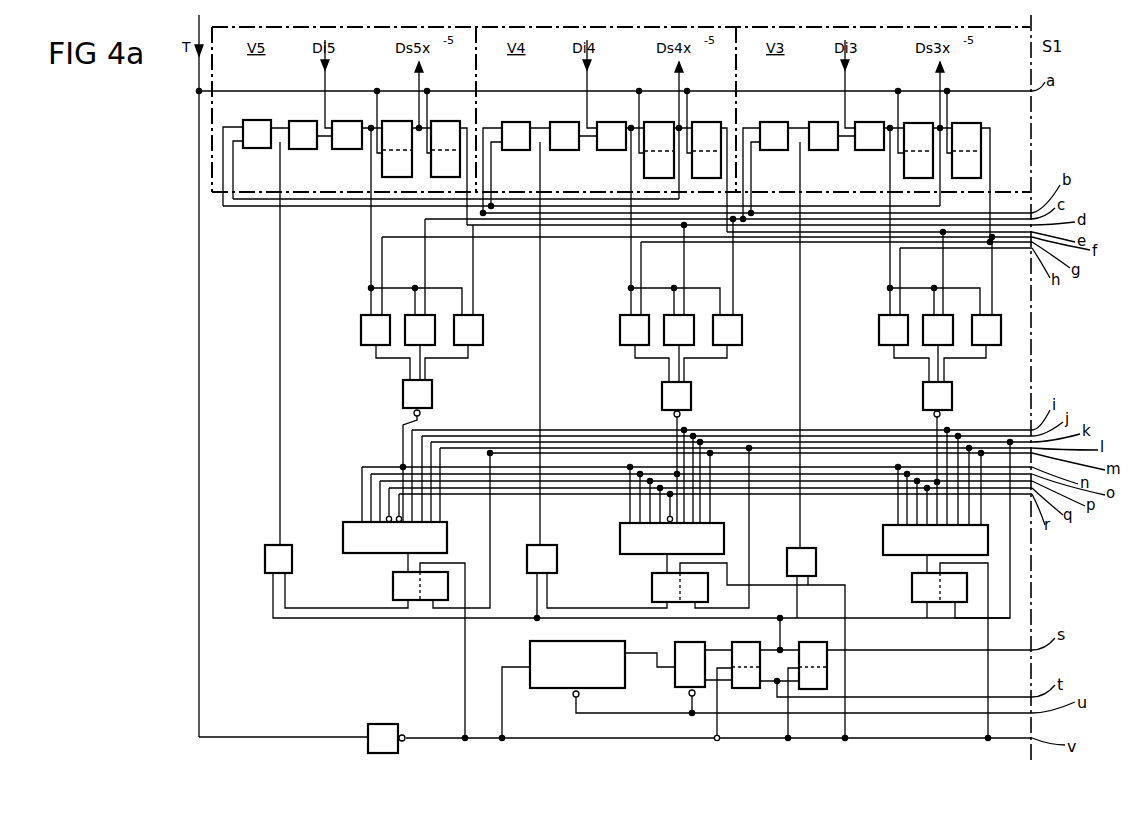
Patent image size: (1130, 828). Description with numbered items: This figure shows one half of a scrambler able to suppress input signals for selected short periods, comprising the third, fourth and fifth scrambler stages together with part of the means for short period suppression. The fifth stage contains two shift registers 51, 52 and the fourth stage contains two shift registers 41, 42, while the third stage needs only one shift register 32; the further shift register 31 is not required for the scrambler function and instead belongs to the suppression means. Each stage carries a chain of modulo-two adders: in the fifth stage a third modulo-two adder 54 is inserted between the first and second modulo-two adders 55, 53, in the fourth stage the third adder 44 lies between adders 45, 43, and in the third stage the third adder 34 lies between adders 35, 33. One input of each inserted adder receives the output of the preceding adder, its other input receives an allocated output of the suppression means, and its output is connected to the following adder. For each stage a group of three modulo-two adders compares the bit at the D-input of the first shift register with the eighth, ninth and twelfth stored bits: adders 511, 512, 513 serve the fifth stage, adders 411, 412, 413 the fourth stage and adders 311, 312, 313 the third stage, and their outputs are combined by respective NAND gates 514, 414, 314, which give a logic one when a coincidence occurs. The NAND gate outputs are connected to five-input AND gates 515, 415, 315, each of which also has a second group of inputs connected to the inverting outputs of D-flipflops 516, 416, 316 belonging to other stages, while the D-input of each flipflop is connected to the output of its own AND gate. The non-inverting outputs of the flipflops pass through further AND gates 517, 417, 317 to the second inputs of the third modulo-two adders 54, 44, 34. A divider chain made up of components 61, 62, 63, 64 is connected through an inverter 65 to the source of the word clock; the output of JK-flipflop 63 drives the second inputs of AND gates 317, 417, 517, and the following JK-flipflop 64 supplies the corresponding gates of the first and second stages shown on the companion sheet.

The shift register 31 is at (955, 104).
The shift register 32 is at (907, 104).
The exclusive-OR gate 33 is at (858, 104).
The third modulo-2 adder 34 is at (812, 104).
The exclusive-OR gate 35 is at (763, 104).
The shift register 41 is at (695, 104).
The shift register 42 is at (647, 104).
The exclusive-OR gate 43 is at (600, 104).
The third modulo-2 adder 44 is at (553, 104).
The exclusive-OR gate 45 is at (505, 104).
The shift register 51 is at (434, 103).
The shift register 52 is at (385, 103).
The exclusive-OR gate 53 is at (335, 103).
The third modulo-2 adder 54 is at (292, 103).
The exclusive-OR gate 55 is at (246, 103).
The modulo-2 adder 311 is at (1001, 322).
The modulo-2 adder 312 is at (952, 322).
The modulo-2 adder 313 is at (907, 322).
The NAND gate 314 is at (950, 416).
The AND gate 315 is at (935, 540).
The D-flipflop 316 is at (940, 587).
The AND gate 317 is at (819, 579).
The modulo-2 adder 411 is at (742, 322).
The modulo-2 adder 412 is at (693, 322).
The modulo-2 adder 413 is at (648, 322).
The NAND gate 414 is at (689, 416).
The AND gate 415 is at (672, 538).
The D-flipflop 416 is at (680, 587).
The AND gate 417 is at (559, 576).
The modulo-2 adder 511 is at (483, 322).
The modulo-2 adder 512 is at (434, 322).
The modulo-2 adder 513 is at (389, 322).
The NAND gate 514 is at (430, 414).
The AND gate 515 is at (395, 537).
The D-flipflop 516 is at (421, 586).
The AND gate 517 is at (294, 576).
The first divider 61 is at (614, 638).
The divider chain component 62 is at (676, 629).
The JK-flipflop 63 is at (734, 629).
The JK-flipflop 64 is at (827, 640).
The inverter 65 is at (382, 711).